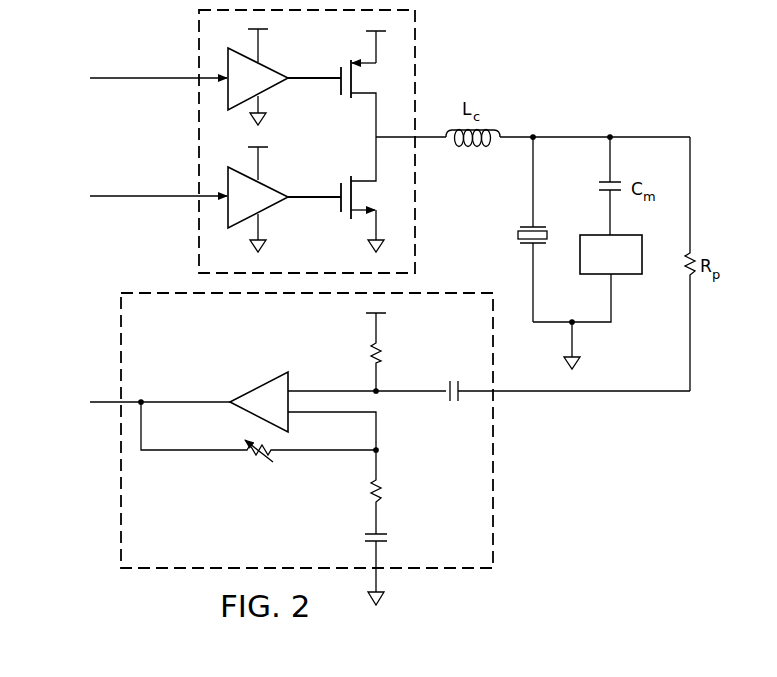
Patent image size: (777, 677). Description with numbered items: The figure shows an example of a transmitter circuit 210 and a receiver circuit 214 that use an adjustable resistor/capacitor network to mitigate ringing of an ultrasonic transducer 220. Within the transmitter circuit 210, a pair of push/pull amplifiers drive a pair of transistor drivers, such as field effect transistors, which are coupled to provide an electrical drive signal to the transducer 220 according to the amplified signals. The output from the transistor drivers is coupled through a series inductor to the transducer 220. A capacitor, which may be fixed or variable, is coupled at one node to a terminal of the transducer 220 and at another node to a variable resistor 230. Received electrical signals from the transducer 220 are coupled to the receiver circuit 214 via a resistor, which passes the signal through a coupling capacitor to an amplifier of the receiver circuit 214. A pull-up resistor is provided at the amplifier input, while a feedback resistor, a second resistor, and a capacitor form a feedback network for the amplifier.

The transmitter circuit 210 is at (417, 79).
The receiver circuit 214 is at (119, 469).
The ultrasonic transducer 220 is at (517, 233).
The variable resistor 230 is at (623, 275).